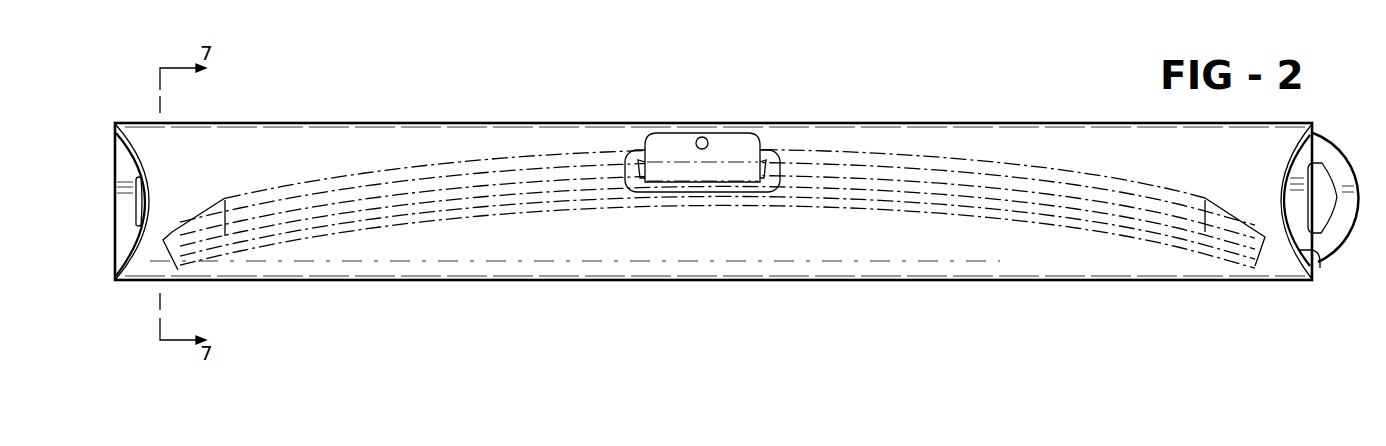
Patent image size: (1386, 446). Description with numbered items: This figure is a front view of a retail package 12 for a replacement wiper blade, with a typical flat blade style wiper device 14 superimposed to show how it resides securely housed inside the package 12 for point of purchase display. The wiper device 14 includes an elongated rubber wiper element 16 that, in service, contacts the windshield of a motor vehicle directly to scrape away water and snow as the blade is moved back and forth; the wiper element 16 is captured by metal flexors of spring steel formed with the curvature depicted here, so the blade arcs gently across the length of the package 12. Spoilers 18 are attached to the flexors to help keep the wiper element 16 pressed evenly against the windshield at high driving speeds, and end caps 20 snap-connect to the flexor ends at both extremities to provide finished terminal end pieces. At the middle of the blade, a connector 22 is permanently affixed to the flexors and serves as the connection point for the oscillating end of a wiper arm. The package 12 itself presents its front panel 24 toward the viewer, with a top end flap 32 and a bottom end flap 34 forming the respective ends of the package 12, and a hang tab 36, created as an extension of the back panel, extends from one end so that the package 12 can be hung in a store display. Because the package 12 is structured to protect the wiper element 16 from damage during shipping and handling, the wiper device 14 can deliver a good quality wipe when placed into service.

The package 12 is at (949, 295).
The flat blade style wiper device 14 is at (960, 160).
The wiper element 16 is at (446, 222).
The spoilers 18 is at (477, 160).
The end caps 20 is at (207, 200).
The connector 22 is at (648, 137).
The front panel 24 is at (782, 281).
The top end flap 32 is at (1320, 265).
The bottom end flap 34 is at (130, 258).
The hang tab 36 is at (1354, 180).